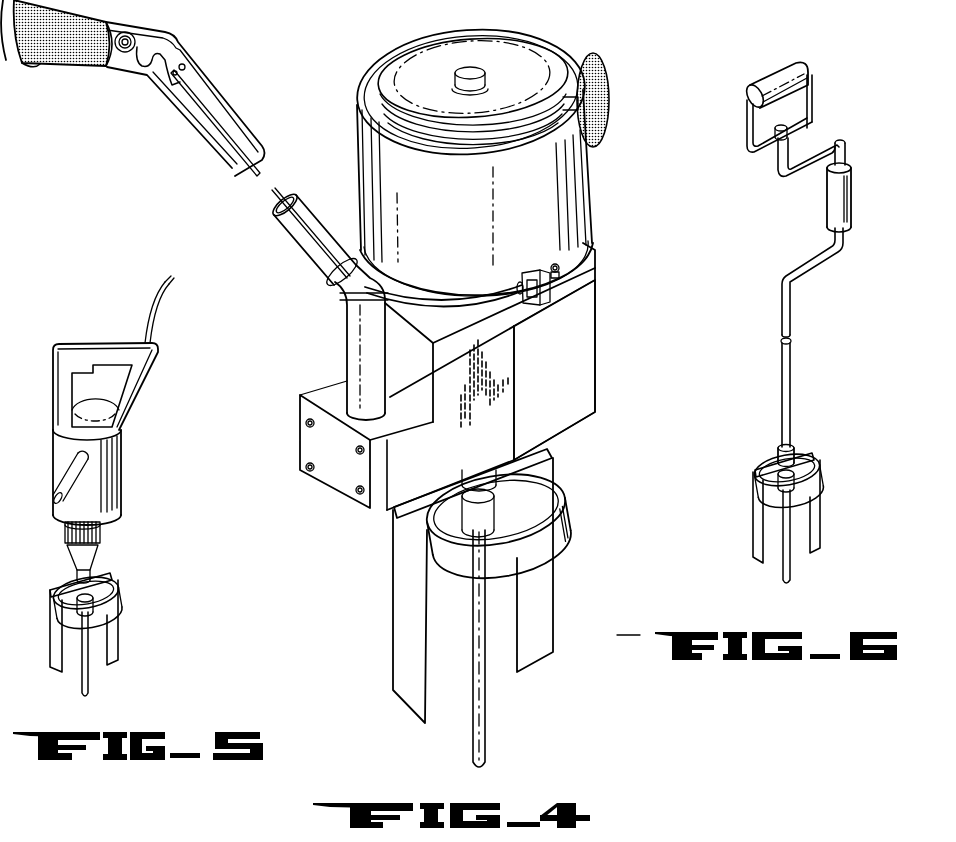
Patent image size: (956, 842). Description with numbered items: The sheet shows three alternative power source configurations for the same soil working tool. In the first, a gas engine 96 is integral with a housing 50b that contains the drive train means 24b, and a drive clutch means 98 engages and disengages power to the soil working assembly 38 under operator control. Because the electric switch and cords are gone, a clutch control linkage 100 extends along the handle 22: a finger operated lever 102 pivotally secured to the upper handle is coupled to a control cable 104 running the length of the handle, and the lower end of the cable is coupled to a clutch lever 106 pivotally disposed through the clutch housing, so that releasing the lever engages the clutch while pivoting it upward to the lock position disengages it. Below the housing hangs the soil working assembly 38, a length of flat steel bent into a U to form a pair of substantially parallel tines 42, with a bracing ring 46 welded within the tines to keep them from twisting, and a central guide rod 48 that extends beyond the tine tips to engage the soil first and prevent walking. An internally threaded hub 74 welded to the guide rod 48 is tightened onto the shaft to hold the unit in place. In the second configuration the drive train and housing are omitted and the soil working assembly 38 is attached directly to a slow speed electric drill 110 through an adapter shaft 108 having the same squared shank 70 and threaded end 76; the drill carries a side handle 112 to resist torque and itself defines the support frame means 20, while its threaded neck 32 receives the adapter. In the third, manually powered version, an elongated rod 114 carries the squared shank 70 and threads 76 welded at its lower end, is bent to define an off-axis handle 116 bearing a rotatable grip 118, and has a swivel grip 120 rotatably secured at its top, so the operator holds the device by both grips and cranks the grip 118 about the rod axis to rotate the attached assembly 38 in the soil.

In FIG. 4, the support frame means 20 is at (310, 312).
In FIG. 4, the handle 22 is at (297, 255).
In FIG. 4, the drive train means 24b is at (612, 340).
In FIG. 5, the threaded neck 32 is at (107, 538).
In FIG. 4, the soil working assembly 38 is at (568, 562).
In FIG. 5, the soil working assembly 38 is at (132, 620).
In FIG. 6, the soil working assembly 38 is at (838, 492).
In FIG. 4, the tines 42 is at (554, 612).
In FIG. 5, the tines 42 is at (118, 645).
In FIG. 6, the tines 42 is at (823, 535).
In FIG. 4, the bracing ring 46 is at (565, 514).
In FIG. 5, the bracing ring 46 is at (114, 600).
In FIG. 6, the bracing ring 46 is at (811, 498).
In FIG. 4, the guide rod 48 is at (485, 723).
In FIG. 5, the guide rod 48 is at (89, 685).
In FIG. 6, the guide rod 48 is at (793, 567).
In FIG. 4, the housing 50b is at (590, 400).
In FIG. 6, the squared shank 70 is at (794, 450).
In FIG. 6, the threads 76 is at (786, 455).
In FIG. 4, the internally threaded hub 74 is at (493, 515).
In FIG. 5, the internally threaded hub 74 is at (107, 586).
In FIG. 6, the internally threaded hub 74 is at (811, 473).
In FIG. 4, the gas engine 96 is at (597, 193).
In FIG. 4, the drive clutch means 98 is at (447, 280).
In FIG. 4, the clutch control linkage 100 is at (203, 79).
In FIG. 4, the finger operated lever 102 is at (143, 43).
In FIG. 4, the control cable 104 is at (259, 167).
In FIG. 4, the clutch lever 106 is at (558, 277).
In FIG. 5, the adapter shaft 108 is at (88, 570).
In FIG. 5, the slow speed electric drill 110 is at (123, 463).
In FIG. 5, the side handle 112 is at (67, 483).
In FIG. 6, the elongated rod 114 is at (789, 312).
In FIG. 6, the off-axis handle 116 is at (837, 140).
In FIG. 6, the rotatable grip 118 is at (851, 193).
In FIG. 6, the swivel grip 120 is at (773, 82).